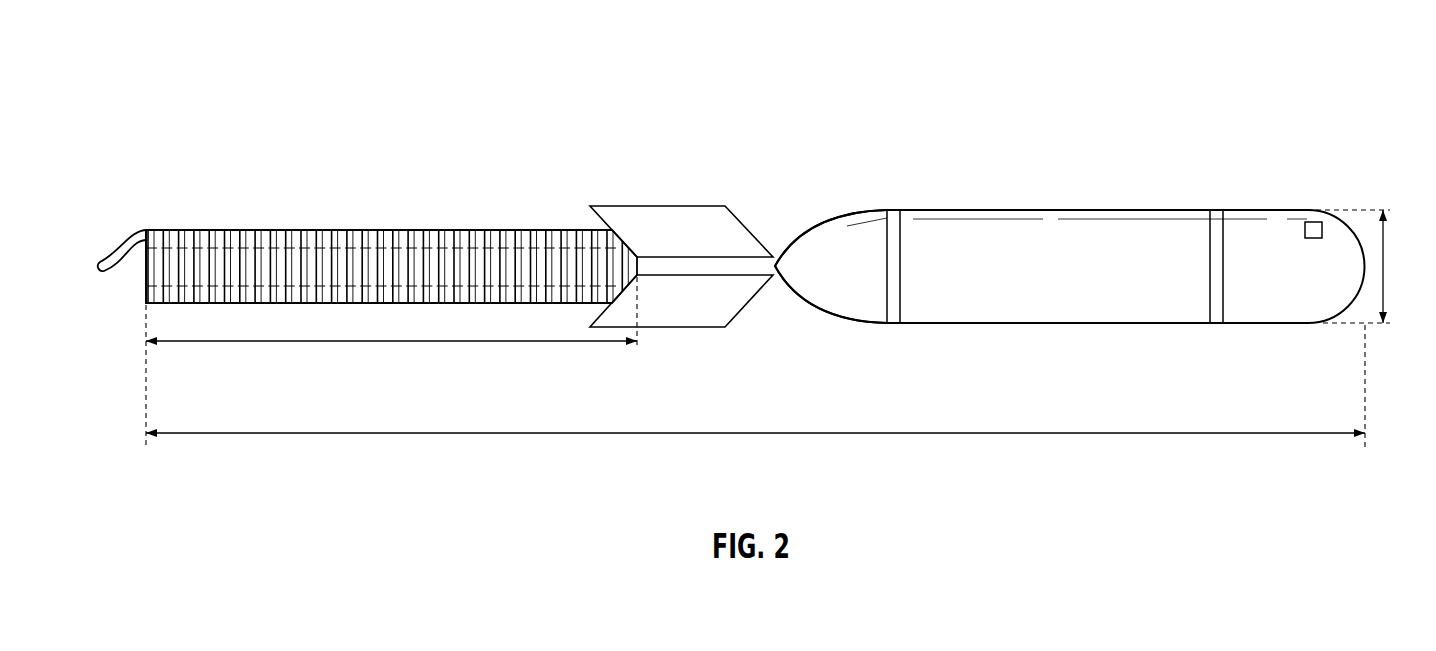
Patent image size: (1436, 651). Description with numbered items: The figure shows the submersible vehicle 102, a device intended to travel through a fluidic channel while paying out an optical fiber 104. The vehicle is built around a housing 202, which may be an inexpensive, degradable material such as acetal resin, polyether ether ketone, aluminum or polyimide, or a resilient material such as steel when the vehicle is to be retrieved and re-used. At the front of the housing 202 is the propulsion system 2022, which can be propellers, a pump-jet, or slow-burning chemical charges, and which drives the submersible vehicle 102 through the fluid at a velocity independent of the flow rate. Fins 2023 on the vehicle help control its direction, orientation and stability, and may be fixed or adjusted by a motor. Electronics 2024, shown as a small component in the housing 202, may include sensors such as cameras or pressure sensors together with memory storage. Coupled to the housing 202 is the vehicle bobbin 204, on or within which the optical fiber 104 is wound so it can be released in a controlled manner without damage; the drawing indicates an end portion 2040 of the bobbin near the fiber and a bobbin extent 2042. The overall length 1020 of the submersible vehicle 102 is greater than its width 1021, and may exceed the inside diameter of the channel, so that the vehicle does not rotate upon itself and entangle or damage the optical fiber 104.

The submersible vehicle 102 is at (1356, 91).
The housing 202 is at (1097, 210).
The propulsion system 2022 is at (853, 240).
The fins 2023 is at (693, 205).
The electronics 2024 is at (1316, 222).
The vehicle bobbin 204 is at (418, 229).
The tether end 2040 is at (144, 266).
The tether length 2042 is at (392, 343).
The optical fiber 104 is at (104, 265).
The length 1020 is at (755, 434).
The width 1021 is at (1385, 297).